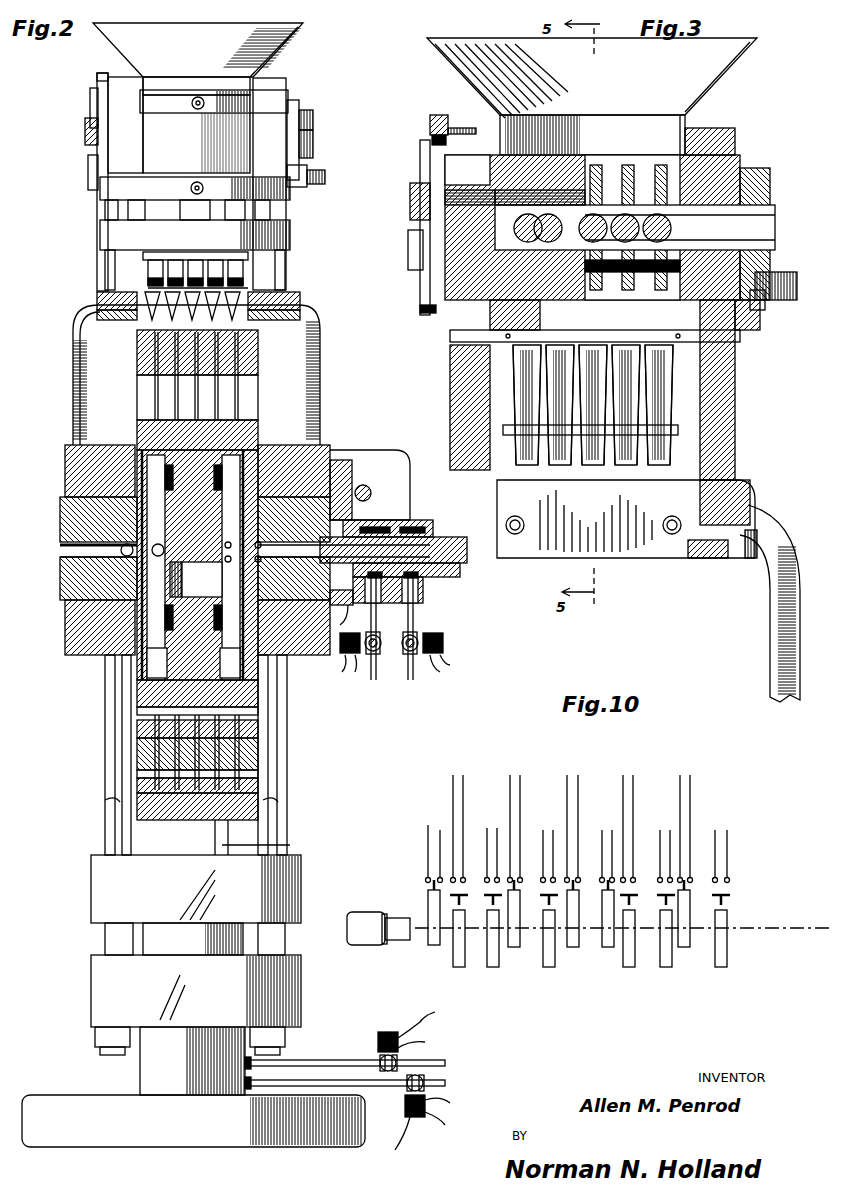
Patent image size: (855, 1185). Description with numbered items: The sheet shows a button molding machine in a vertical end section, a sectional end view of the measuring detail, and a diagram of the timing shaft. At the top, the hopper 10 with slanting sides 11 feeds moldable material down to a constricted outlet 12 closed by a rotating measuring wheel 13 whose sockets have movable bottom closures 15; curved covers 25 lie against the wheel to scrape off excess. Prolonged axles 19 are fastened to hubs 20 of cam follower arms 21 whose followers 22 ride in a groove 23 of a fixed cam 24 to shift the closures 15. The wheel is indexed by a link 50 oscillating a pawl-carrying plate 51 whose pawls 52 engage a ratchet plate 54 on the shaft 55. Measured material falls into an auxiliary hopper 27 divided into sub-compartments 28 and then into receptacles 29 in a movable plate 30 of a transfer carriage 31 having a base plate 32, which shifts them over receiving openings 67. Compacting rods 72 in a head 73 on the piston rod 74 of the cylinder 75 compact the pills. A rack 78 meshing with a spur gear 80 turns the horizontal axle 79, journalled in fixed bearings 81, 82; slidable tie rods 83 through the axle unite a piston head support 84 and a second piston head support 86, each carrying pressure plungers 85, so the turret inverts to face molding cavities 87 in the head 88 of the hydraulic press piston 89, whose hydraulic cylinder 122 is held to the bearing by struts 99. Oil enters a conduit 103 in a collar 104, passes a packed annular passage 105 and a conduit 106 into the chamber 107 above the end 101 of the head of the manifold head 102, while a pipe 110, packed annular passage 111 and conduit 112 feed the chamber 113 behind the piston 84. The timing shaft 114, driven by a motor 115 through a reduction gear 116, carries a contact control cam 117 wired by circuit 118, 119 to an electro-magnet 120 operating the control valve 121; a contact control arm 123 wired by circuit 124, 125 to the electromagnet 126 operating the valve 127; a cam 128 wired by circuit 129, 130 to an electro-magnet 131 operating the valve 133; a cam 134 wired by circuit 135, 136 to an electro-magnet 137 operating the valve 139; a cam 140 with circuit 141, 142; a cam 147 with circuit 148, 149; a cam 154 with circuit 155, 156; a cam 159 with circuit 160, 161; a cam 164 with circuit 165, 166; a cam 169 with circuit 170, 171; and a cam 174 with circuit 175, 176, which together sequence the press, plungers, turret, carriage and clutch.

In FIG. 2, the hopper 10 is at (290, 30).
In FIG. 3, the hopper 10 is at (730, 70).
In FIG. 2, the slanting sides 11 is at (268, 55).
In FIG. 3, the slanting sides 11 is at (745, 57).
In FIG. 2, the constricted outlet 12 is at (175, 70).
In FIG. 3, the constricted outlet 12 is at (650, 123).
In FIG. 2, the measuring wheel 13 is at (286, 85).
In FIG. 3, the measuring wheel 13 is at (730, 160).
In FIG. 3, the bottom closures 15 is at (725, 135).
In FIG. 3, the prolonged axles 19 is at (440, 218).
In FIG. 2, the hubs 20 is at (85, 132).
In FIG. 3, the hubs 20 is at (410, 192).
In FIG. 2, the cam follower arms 21 is at (90, 93).
In FIG. 3, the cam follower arms 21 is at (420, 160).
In FIG. 3, the followers 22 is at (435, 142).
In FIG. 3, the groove 23 is at (450, 340).
In FIG. 2, the fixed cam 24 is at (105, 73).
In FIG. 3, the fixed cam 24 is at (440, 115).
In FIG. 3, the curved covers 25 is at (755, 330).
In FIG. 2, the auxiliary hopper 27 is at (245, 275).
In FIG. 3, the auxiliary hopper 27 is at (672, 405).
In FIG. 3, the sub-compartments 28 is at (660, 372).
In FIG. 2, the receptacles 29 is at (240, 288).
In FIG. 2, the movable plate 30 is at (98, 292).
In FIG. 2, the transfer carriage 31 is at (255, 290).
In FIG. 3, the transfer carriage 31 is at (650, 558).
In FIG. 2, the base plate 32 is at (250, 310).
In FIG. 2, the link 50 is at (312, 184).
In FIG. 3, the link 50 is at (780, 272).
In FIG. 2, the pawl-carrying plate 51 is at (299, 104).
In FIG. 3, the pawl-carrying plate 51 is at (755, 310).
In FIG. 2, the pawls 52 is at (313, 115).
In FIG. 2, the ratchet plate 54 is at (313, 137).
In FIG. 3, the shaft 55 is at (775, 205).
In FIG. 2, the receiving openings 67 is at (245, 360).
In FIG. 2, the compacting rods 72 is at (150, 256).
In FIG. 2, the head 73 is at (105, 230).
In FIG. 2, the piston rod 74 is at (183, 200).
In FIG. 2, the cylinder 75 is at (214, 131).
In FIG. 2, the rack 78 is at (340, 465).
In FIG. 2, the horizontal axle 79 is at (62, 577).
In FIG. 2, the spur gear 80 is at (345, 506).
In FIG. 2, the fixed bearing 81 is at (340, 655).
In FIG. 2, the fixed bearing 82 is at (72, 632).
In FIG. 2, the tie rods 83 is at (148, 662).
In FIG. 2, the piston head support 84 is at (225, 435).
In FIG. 2, the pressure plungers 85 is at (240, 392).
In FIG. 2, the second piston head support 86 is at (150, 690).
In FIG. 2, the molding cavities 87 is at (250, 783).
In FIG. 2, the head 88 is at (250, 812).
In FIG. 2, the hydraulic press piston 89 is at (264, 837).
In FIG. 2, the struts 99 is at (107, 828).
In FIG. 2, the end of piston head 101 is at (208, 592).
In FIG. 2, the manifold head 102 is at (140, 712).
In FIG. 2, the conduit 103 is at (415, 612).
In FIG. 2, the collar 104 is at (420, 595).
In FIG. 2, the packed annular passage 105 is at (420, 522).
In FIG. 2, the conduit 106 is at (450, 572).
In FIG. 2, the chamber 107 is at (192, 577).
In FIG. 2, the pipe 110 is at (376, 620).
In FIG. 2, the packed annular passage 111 is at (375, 530).
In FIG. 2, the conduit 112 is at (360, 520).
In FIG. 2, the chamber 113 is at (178, 540).
In FIG. 10, the timing shaft 114 is at (775, 938).
In FIG. 10, the motor 115 is at (367, 912).
In FIG. 10, the reduction gear 116 is at (398, 920).
In FIG. 10, the contact control cam 117 is at (430, 940).
In FIG. 2, the circuit 118 is at (428, 1016).
In FIG. 10, the circuit 118 is at (428, 842).
In FIG. 2, the circuit 119 is at (425, 1042).
In FIG. 10, the circuit 119 is at (440, 825).
In FIG. 2, the electro-magnet 120 is at (378, 1040).
In FIG. 2, the control valve 121 is at (400, 1055).
In FIG. 2, the hydraulic cylinder 122 is at (148, 1071).
In FIG. 10, the contact control arm 123 is at (455, 963).
In FIG. 2, the circuit 124 is at (450, 1103).
In FIG. 10, the circuit 124 is at (453, 783).
In FIG. 2, the circuit 125 is at (445, 1125).
In FIG. 10, the circuit 125 is at (463, 775).
In FIG. 2, the electromagnet 126 is at (395, 1145).
In FIG. 2, the valve 127 is at (423, 1080).
In FIG. 10, the contact control cam 128 is at (492, 967).
In FIG. 2, the circuit 129 is at (342, 672).
In FIG. 10, the circuit 129 is at (487, 828).
In FIG. 2, the circuit 130 is at (355, 672).
In FIG. 10, the circuit 130 is at (500, 825).
In FIG. 2, the electro-magnet 131 is at (350, 633).
In FIG. 2, the valve 133 is at (380, 655).
In FIG. 10, the contact control cam 134 is at (513, 947).
In FIG. 2, the circuit 135 is at (440, 672).
In FIG. 10, the circuit 135 is at (510, 775).
In FIG. 2, the circuit 136 is at (450, 665).
In FIG. 10, the circuit 136 is at (528, 765).
In FIG. 2, the electro-magnet 137 is at (443, 645).
In FIG. 2, the valve 139 is at (420, 640).
In FIG. 10, the contact control cam 140 is at (549, 967).
In FIG. 10, the circuit 141 is at (543, 832).
In FIG. 10, the circuit 142 is at (553, 828).
In FIG. 10, the contact control cam 147 is at (575, 947).
In FIG. 10, the circuit 148 is at (567, 775).
In FIG. 10, the circuit 149 is at (578, 777).
In FIG. 10, the contact control cam 154 is at (608, 947).
In FIG. 10, the circuit 155 is at (602, 832).
In FIG. 10, the circuit 156 is at (612, 828).
In FIG. 10, the contact control cam 159 is at (629, 967).
In FIG. 10, the circuit 160 is at (623, 775).
In FIG. 10, the circuit 161 is at (633, 777).
In FIG. 10, the contact control cam 164 is at (666, 967).
In FIG. 10, the circuit 165 is at (660, 832).
In FIG. 10, the circuit 166 is at (670, 828).
In FIG. 10, the contact control cam 169 is at (686, 947).
In FIG. 10, the circuit 170 is at (680, 775).
In FIG. 10, the circuit 171 is at (690, 777).
In FIG. 10, the contact control cam 174 is at (722, 967).
In FIG. 10, the circuit 175 is at (715, 832).
In FIG. 10, the circuit 176 is at (727, 832).